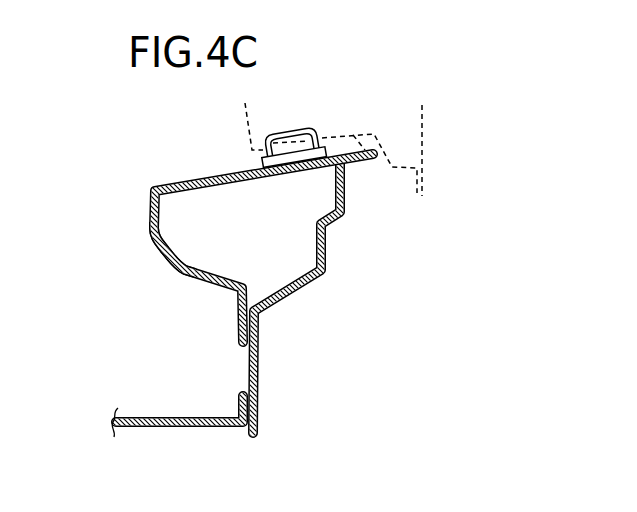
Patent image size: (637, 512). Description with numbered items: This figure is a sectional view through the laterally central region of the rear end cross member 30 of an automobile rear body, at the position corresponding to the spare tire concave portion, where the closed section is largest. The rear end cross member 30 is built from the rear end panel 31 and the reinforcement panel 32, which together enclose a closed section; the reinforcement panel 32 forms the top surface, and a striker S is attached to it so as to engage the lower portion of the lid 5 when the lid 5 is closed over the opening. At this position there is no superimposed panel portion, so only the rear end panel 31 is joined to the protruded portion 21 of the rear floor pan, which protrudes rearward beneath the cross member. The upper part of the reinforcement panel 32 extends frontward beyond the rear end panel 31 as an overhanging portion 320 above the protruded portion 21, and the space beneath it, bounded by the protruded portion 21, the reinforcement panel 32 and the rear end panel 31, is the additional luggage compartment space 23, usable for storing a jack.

The lid 5 is at (425, 132).
The striker S is at (292, 127).
The protruded portion 21 is at (183, 427).
The additional luggage compartment space 23 is at (208, 382).
The rear end cross member 30 is at (249, 293).
The rear end panel 31 is at (325, 247).
The reinforcement panel 32 is at (148, 228).
The overhanging portion 320 is at (176, 276).